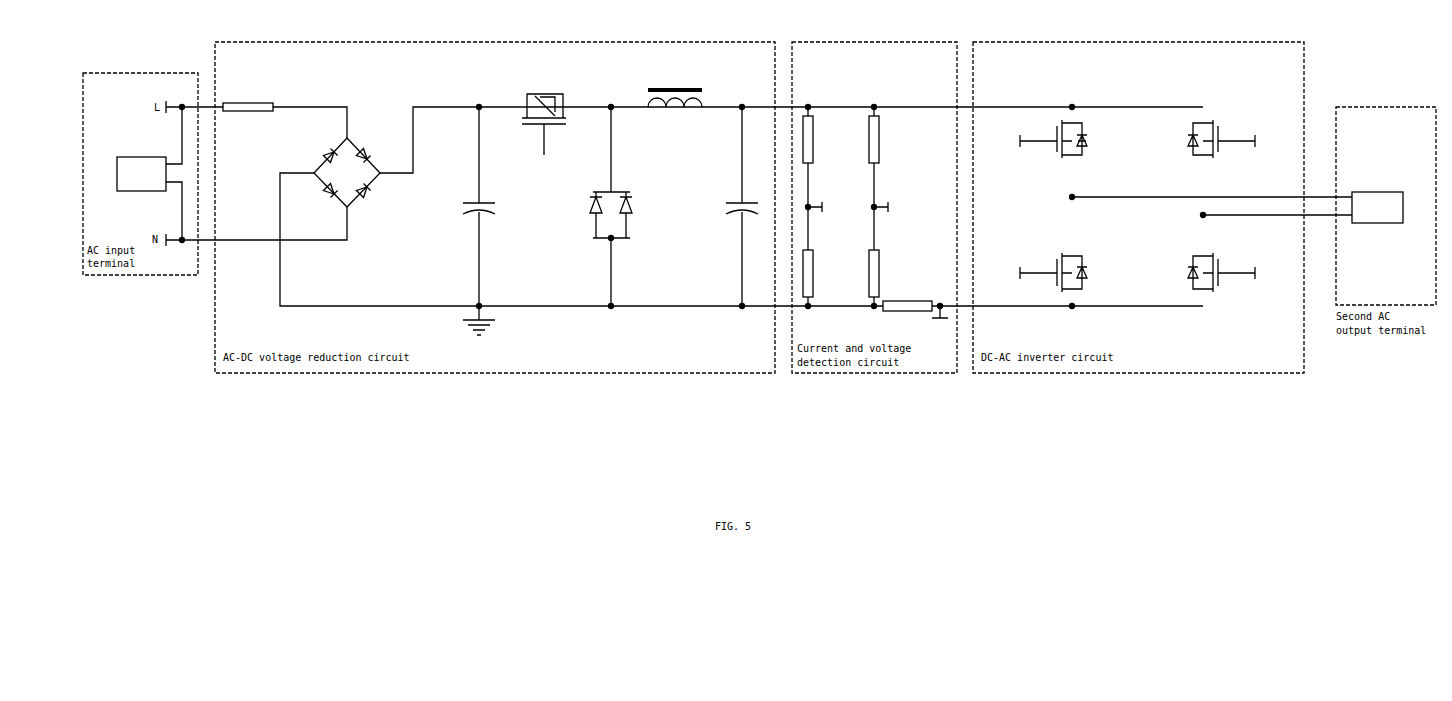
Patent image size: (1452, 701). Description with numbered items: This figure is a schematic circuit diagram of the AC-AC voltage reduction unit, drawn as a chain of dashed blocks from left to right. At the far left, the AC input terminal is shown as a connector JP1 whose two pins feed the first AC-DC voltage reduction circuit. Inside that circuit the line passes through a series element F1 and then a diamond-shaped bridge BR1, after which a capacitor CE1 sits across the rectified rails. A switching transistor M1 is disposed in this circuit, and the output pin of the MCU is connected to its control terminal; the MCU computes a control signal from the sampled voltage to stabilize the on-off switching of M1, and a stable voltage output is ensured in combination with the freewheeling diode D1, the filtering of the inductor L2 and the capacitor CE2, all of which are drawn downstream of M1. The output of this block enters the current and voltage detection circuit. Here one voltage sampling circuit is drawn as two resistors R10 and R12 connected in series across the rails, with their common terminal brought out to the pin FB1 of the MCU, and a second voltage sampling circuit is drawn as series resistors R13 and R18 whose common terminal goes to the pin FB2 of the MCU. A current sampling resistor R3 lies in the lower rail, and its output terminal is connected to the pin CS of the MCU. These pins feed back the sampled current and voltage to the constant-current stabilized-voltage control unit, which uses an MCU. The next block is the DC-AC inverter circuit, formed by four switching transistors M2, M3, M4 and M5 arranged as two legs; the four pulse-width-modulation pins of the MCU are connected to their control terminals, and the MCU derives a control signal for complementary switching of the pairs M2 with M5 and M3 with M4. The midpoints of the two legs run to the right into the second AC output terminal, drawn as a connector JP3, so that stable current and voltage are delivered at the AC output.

The AC input terminal connector JP1 is at (141, 167).
The fuse F1 is at (248, 100).
The bridge rectifier BR1 is at (347, 174).
The electrolytic capacitor CE1 is at (479, 206).
The switching transistor M1 is at (549, 131).
The freewheeling diode D1 is at (611, 206).
The inductor L2 is at (675, 90).
The capacitor CE2 is at (742, 206).
The resistor R10 is at (814, 157).
The resistor R12 is at (814, 256).
The resistor R13 is at (880, 157).
The resistor R18 is at (880, 256).
The pin FB1 of the MCU FB1 is at (825, 207).
The pin FB2 of the MCU FB2 is at (891, 207).
The current sensing resistor R3 is at (907, 313).
The pin CS of the MCU CS is at (940, 320).
The switching transistor M2 is at (1040, 139).
The switching transistor M3 is at (1040, 272).
The switching transistor M4 is at (1224, 139).
The switching transistor M5 is at (1224, 272).
The second AC output terminal connector JP3 is at (1377, 200).